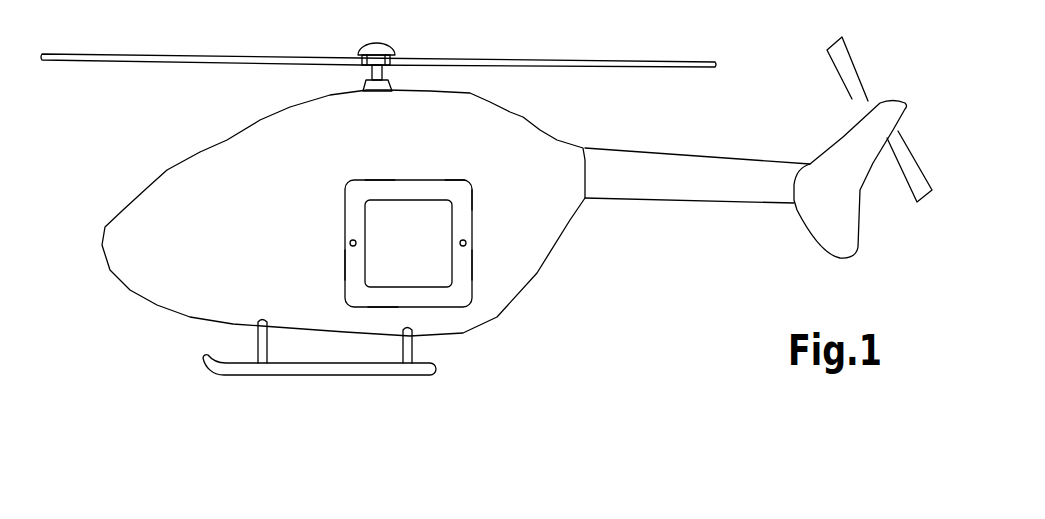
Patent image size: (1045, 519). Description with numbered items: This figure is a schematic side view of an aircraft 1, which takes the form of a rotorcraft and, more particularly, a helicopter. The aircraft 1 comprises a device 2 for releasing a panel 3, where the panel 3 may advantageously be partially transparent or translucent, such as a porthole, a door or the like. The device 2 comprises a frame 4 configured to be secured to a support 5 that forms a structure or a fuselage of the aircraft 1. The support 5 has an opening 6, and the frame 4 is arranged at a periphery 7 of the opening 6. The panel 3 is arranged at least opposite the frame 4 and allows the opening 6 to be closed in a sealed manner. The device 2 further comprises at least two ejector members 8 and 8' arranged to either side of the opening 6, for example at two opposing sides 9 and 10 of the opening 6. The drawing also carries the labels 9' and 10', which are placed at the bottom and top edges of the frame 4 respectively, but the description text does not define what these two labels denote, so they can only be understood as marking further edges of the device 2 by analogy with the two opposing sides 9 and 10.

The aircraft 1 is at (486, 206).
The device 2 is at (429, 219).
The panel 3 is at (430, 252).
The frame 4 is at (423, 190).
The support 5 is at (290, 173).
The opening 6 is at (486, 196).
The periphery 7 is at (457, 186).
The ejector member 8 is at (318, 225).
The ejector member 8' is at (502, 225).
The side 9 is at (311, 279).
The bottom edge 9' is at (365, 367).
The side 10 is at (526, 289).
The top edge 10' is at (351, 158).